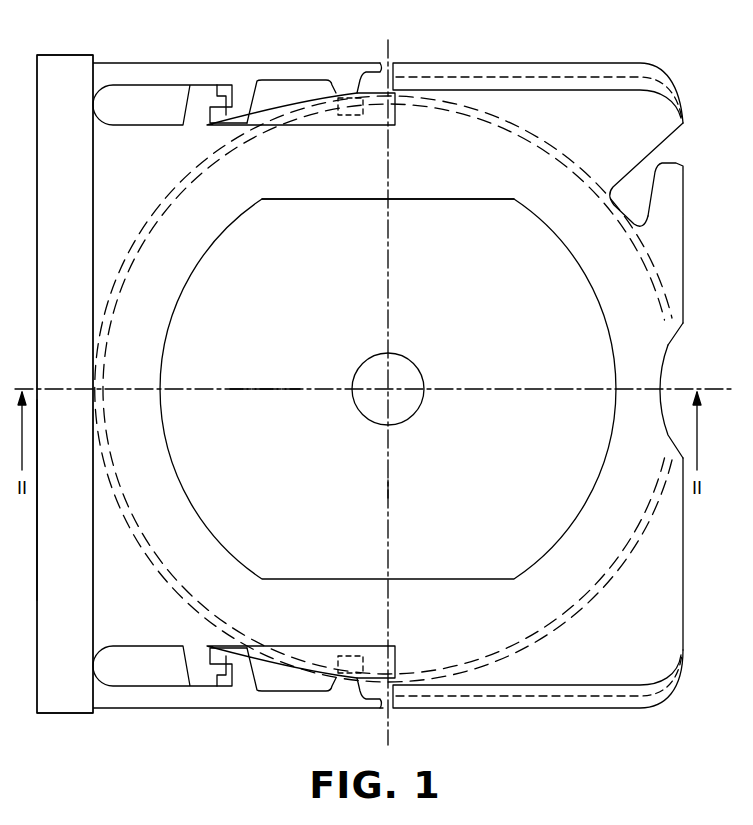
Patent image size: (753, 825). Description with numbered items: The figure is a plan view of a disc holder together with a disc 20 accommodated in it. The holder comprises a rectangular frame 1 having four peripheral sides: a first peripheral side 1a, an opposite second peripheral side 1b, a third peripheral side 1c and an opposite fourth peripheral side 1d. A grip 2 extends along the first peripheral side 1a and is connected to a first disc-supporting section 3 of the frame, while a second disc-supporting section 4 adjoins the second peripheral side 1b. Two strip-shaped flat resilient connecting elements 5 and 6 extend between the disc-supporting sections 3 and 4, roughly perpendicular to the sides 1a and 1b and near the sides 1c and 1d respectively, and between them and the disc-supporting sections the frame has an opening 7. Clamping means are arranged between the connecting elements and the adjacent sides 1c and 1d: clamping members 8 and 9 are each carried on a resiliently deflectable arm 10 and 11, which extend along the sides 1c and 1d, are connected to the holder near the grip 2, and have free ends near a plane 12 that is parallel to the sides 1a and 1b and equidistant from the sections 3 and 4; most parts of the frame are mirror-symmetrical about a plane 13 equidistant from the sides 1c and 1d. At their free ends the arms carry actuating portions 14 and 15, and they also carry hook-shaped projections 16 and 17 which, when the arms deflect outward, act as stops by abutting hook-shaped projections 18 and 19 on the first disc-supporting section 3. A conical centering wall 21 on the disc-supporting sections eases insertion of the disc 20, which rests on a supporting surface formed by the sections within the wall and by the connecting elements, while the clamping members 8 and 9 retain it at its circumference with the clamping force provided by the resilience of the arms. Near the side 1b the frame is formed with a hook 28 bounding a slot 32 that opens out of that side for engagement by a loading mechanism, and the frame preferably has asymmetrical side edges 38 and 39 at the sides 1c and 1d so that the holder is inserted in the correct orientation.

The rectangular frame 1 is at (538, 713).
The first peripheral side 1a is at (37, 500).
The second peripheral side 1b is at (683, 505).
The third peripheral side 1c is at (478, 710).
The fourth peripheral side 1d is at (456, 66).
The grip 2 is at (75, 712).
The first disc-supporting section 3 is at (174, 580).
The second disc-supporting section 4 is at (575, 590).
The connecting element 5 is at (460, 598).
The connecting element 6 is at (440, 176).
The opening 7 is at (398, 391).
The clamping member 8 is at (350, 655).
The clamping member 9 is at (345, 118).
The resiliently deflectable arm 10 is at (296, 690).
The resiliently deflectable arm 11 is at (288, 76).
The plane 12 is at (385, 510).
The plane 13 is at (276, 394).
The actuating portion 14 is at (377, 704).
The actuating portion 15 is at (377, 68).
The hook-shaped projection 16 is at (250, 650).
The hook-shaped projection 17 is at (241, 110).
The hook-shaped projection 18 is at (221, 680).
The hook-shaped projection 19 is at (219, 96).
The disc 20 is at (668, 386).
The conical centering wall 21 is at (664, 322).
The hook 28 is at (676, 178).
The slot 32 is at (634, 180).
The asymmetrical side edge 38 is at (406, 697).
The asymmetrical side edge 39 is at (410, 76).